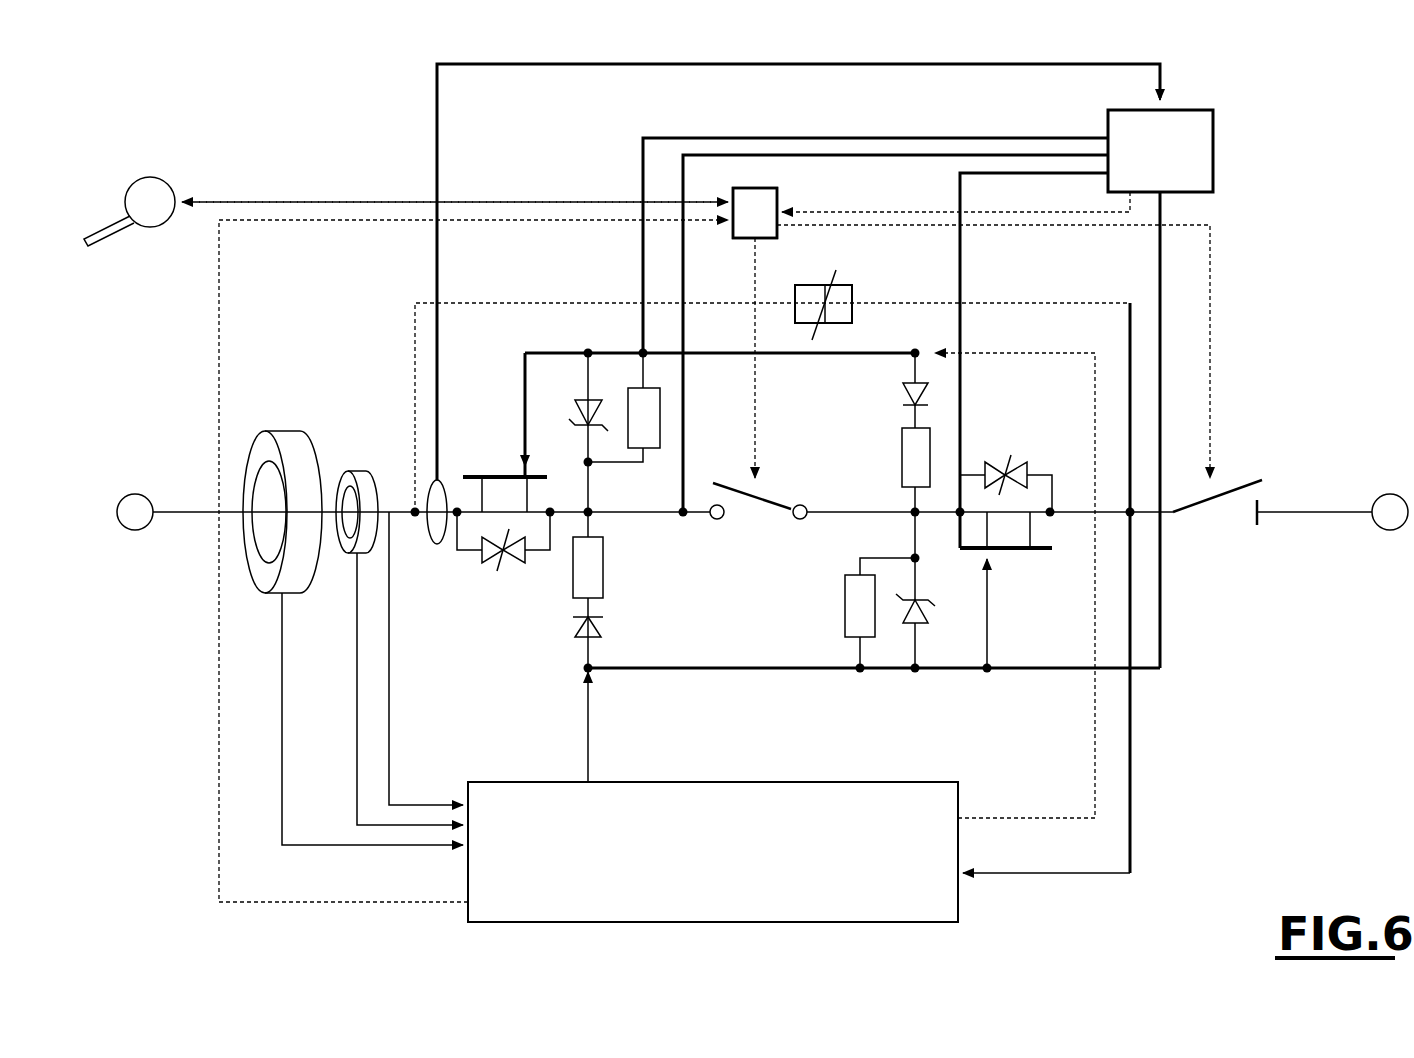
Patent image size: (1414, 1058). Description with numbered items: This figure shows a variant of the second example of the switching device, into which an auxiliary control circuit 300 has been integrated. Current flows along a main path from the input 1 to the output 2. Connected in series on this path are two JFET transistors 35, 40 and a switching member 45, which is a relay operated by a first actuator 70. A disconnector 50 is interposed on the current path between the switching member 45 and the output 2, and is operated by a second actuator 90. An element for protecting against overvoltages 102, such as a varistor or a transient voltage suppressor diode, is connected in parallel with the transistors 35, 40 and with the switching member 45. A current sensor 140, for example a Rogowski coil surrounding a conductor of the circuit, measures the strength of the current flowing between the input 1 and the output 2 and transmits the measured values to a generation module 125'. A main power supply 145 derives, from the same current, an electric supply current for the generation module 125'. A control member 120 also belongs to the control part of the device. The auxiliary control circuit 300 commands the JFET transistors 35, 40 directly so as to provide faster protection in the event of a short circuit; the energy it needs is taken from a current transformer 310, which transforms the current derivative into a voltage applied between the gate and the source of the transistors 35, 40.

The input 1 is at (126, 528).
The output 2 is at (1392, 528).
The transistor 35 is at (497, 455).
The transistor 40 is at (1053, 540).
The switching member 45 is at (784, 490).
The disconnector 50 is at (1208, 526).
The first actuator 70 is at (755, 188).
The second actuator 90 is at (755, 213).
The element for protecting against overvoltages 102 is at (868, 289).
The control member 120 is at (122, 155).
The generation module 125' is at (713, 852).
The current sensor 140 is at (350, 452).
The main power supply 145 is at (262, 607).
The auxiliary control circuit 300 is at (1239, 128).
The current transformer 310 is at (458, 576).